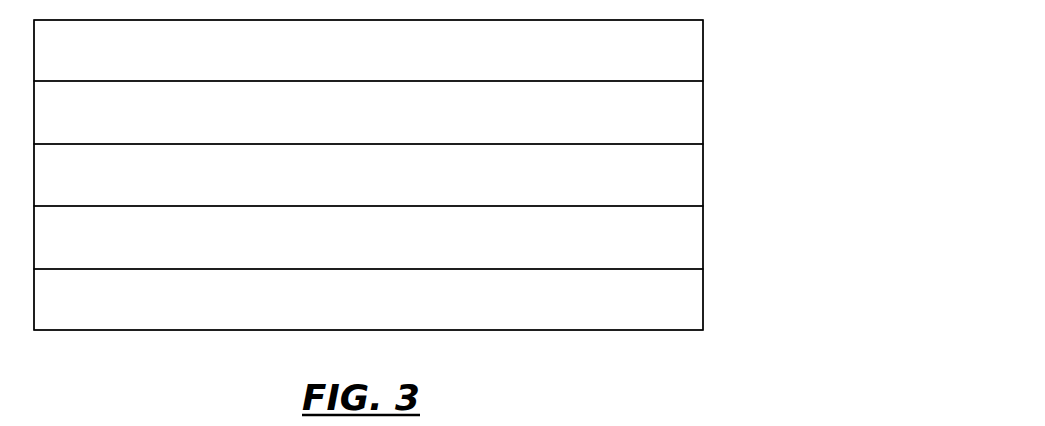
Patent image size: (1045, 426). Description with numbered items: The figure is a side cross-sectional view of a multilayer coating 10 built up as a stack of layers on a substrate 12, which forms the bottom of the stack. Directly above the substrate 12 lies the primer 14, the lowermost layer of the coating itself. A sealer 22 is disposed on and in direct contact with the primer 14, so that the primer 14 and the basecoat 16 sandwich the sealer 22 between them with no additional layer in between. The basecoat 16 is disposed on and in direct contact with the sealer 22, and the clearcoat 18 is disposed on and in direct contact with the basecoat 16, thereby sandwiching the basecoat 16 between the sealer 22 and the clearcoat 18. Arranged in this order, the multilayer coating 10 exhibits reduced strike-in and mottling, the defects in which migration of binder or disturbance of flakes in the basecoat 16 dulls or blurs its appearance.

The multilayer coating 10 is at (847, 176).
The substrate 12 is at (686, 302).
The primer 14 is at (683, 238).
The sealer 22 is at (685, 174).
The basecoat 16 is at (690, 116).
The clearcoat 18 is at (687, 52).